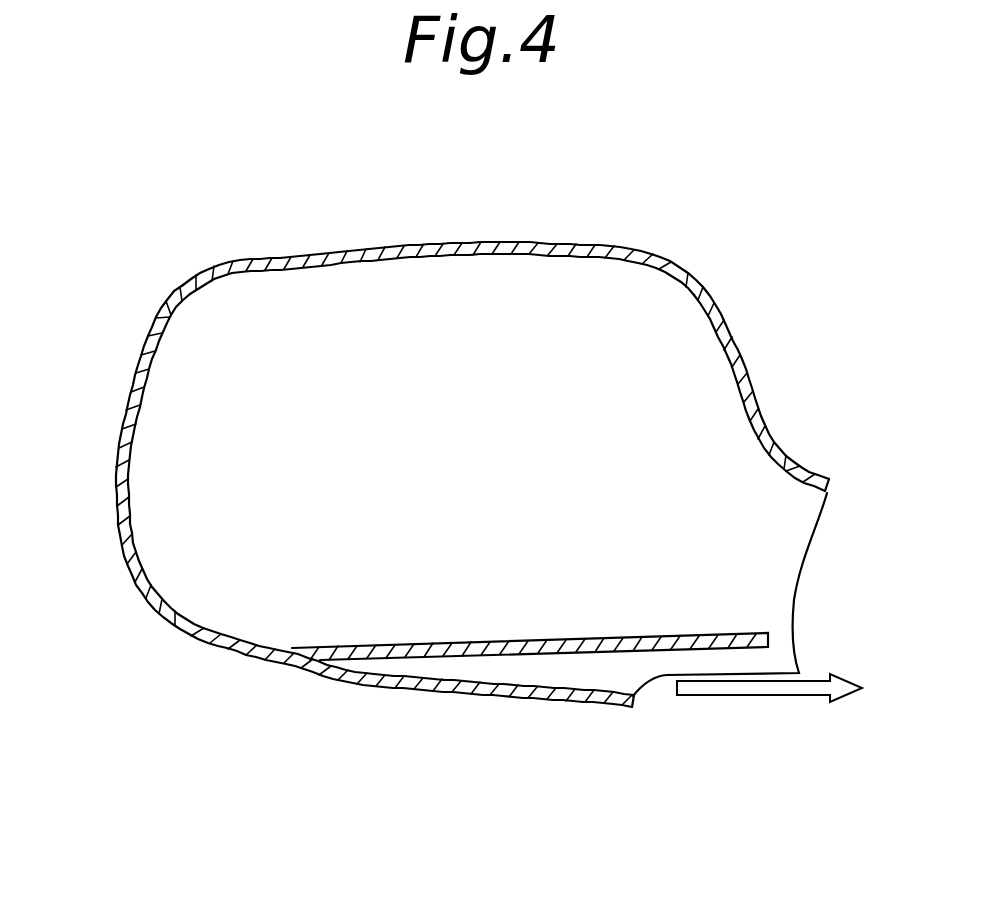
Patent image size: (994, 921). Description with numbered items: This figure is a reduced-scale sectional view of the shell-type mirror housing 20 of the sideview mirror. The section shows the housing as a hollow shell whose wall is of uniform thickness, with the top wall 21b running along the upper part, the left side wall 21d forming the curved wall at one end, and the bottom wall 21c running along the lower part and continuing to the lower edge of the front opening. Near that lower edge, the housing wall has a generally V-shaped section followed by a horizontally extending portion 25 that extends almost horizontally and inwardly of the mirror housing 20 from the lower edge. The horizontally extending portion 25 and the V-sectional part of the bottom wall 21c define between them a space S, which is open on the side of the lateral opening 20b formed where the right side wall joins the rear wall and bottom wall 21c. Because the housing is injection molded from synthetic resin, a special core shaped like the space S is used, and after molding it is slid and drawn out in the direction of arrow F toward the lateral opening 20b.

The mirror housing 20 is at (430, 222).
The lateral opening 20b is at (843, 500).
The top wall 21b is at (287, 254).
The bottom wall 21c is at (120, 440).
The left side wall 21d is at (750, 386).
The horizontally extending portion 25 is at (600, 643).
The space S is at (517, 676).
The direction of arrow F is at (780, 692).